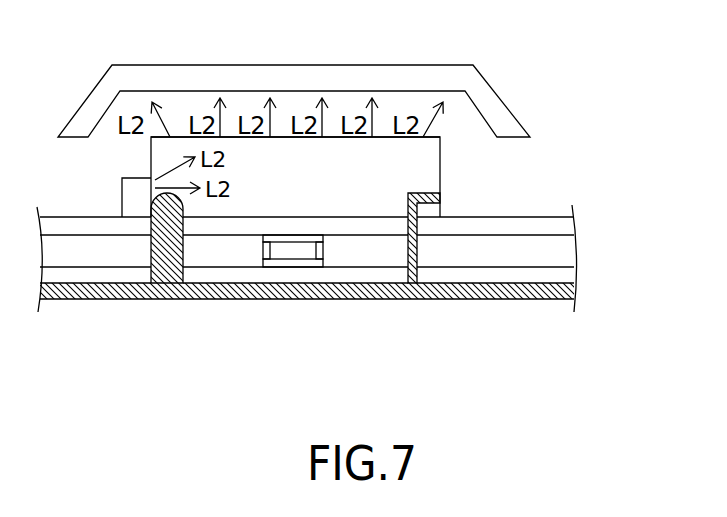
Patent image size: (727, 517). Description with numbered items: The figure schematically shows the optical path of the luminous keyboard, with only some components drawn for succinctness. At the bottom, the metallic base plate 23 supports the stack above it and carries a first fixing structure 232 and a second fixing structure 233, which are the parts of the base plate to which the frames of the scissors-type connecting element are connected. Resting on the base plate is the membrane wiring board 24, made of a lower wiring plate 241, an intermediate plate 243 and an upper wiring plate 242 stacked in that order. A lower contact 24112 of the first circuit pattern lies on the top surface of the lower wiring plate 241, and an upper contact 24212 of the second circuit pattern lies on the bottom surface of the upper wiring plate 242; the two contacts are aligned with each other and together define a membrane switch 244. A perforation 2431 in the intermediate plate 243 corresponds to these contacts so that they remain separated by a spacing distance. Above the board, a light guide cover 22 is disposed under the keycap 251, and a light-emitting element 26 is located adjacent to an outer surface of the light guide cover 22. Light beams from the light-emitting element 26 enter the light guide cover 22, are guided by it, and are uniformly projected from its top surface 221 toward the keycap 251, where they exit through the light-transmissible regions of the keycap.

The keycap 251 is at (238, 68).
The top surface of the light guide cover 221 is at (380, 137).
The light guide cover 22 is at (422, 177).
The light-emitting element 26 is at (133, 205).
The membrane wiring board 24 is at (365, 236).
The upper wiring plate 242 is at (538, 222).
The intermediate plate 243 is at (543, 250).
The lower wiring plate 241 is at (557, 275).
The metallic base plate 23 is at (309, 275).
The first fixing structure 232 is at (168, 260).
The second fixing structure 233 is at (440, 200).
The membrane switch 244 is at (285, 321).
The upper contact 24212 is at (287, 238).
The lower contact 24112 is at (293, 265).
The perforation 2431 is at (333, 300).